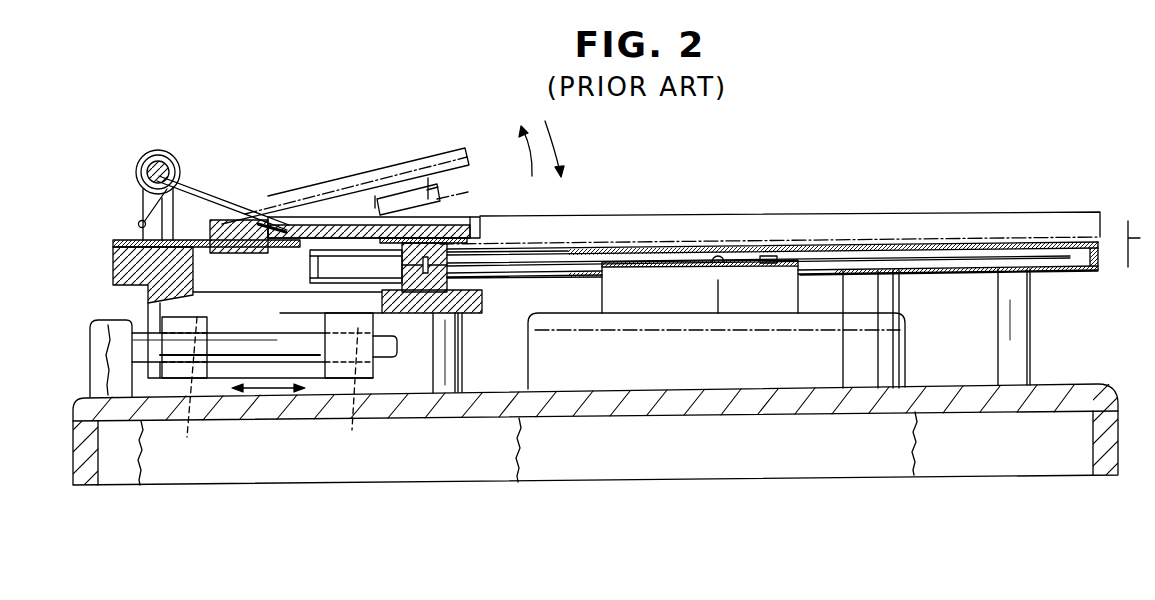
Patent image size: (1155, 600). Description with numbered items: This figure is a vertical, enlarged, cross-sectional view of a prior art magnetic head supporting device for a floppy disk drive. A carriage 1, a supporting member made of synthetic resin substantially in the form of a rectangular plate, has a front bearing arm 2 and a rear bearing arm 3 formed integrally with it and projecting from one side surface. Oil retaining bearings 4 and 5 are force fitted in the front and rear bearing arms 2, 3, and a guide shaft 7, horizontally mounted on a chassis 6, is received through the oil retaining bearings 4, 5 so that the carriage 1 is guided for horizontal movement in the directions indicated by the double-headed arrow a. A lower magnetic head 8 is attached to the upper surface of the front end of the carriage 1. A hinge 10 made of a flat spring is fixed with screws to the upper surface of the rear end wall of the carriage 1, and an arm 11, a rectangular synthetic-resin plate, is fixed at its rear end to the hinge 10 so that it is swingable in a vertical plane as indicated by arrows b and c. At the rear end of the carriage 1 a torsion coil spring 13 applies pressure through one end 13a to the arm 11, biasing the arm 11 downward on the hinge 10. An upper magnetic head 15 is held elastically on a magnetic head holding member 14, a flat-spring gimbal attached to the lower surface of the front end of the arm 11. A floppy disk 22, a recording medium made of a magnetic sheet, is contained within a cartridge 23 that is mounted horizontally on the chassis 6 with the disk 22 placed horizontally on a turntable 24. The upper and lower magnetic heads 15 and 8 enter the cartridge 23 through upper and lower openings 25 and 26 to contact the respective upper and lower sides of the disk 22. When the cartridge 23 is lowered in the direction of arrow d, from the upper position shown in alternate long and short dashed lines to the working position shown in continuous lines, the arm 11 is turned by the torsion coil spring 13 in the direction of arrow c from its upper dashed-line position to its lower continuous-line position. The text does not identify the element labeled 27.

The carriage 1 is at (417, 333).
The front bearing arm 2 is at (327, 322).
The rear bearing arm 3 is at (203, 323).
The oil retaining bearing 4 is at (352, 392).
The oil retaining bearing 5 is at (187, 389).
The chassis 6 is at (105, 327).
The guide shaft 7 is at (255, 344).
The lower magnetic head 8 is at (462, 315).
The hinge 10 is at (185, 241).
The arm 11 is at (320, 229).
The torsion coil spring 13 is at (160, 150).
The one end of torsion coil spring 13a is at (283, 220).
The magnetic head holding member 14 is at (415, 236).
The magnetic head 15 is at (445, 243).
The floppy disk 22 is at (945, 262).
The cartridge 23 is at (857, 248).
The turntable 24 is at (660, 278).
The upper opening 25 is at (527, 252).
The lower opening 26 is at (522, 278).
The support base 27 is at (697, 365).
The double-headed arrow a is at (260, 393).
The arrow b is at (531, 166).
The arrow c is at (564, 146).
The arrow d is at (1141, 241).